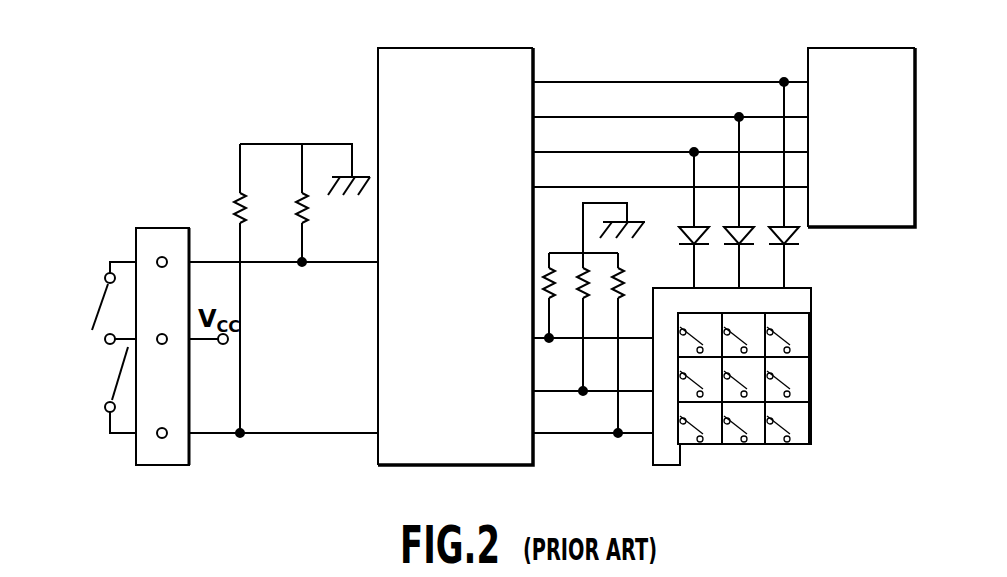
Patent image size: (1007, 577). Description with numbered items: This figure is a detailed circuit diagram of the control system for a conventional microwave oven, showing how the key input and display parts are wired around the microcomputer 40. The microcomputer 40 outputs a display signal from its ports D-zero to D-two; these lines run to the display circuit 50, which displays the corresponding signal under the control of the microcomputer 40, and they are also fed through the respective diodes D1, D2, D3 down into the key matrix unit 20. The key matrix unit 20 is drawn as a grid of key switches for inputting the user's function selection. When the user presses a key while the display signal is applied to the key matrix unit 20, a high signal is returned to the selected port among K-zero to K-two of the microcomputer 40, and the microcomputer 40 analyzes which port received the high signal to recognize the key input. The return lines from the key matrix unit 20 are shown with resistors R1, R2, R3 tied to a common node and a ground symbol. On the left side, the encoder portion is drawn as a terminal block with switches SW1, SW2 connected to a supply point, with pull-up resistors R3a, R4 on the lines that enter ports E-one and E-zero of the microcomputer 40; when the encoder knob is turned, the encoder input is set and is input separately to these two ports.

The key matrix unit 20 is at (811, 384).
The microcomputer 40 is at (480, 48).
The display circuit 50 is at (887, 227).
The switch SW1 is at (94, 303).
The switch SW2 is at (100, 390).
The resistor R1 is at (545, 288).
The resistor R2 is at (583, 282).
The resistor R3 is at (620, 286).
The resistor R3 (pull-up at E0) R3a is at (259, 288).
The resistor R4 is at (319, 203).
The diode D1 is at (803, 183).
The diode D2 is at (748, 200).
The diode D3 is at (704, 218).